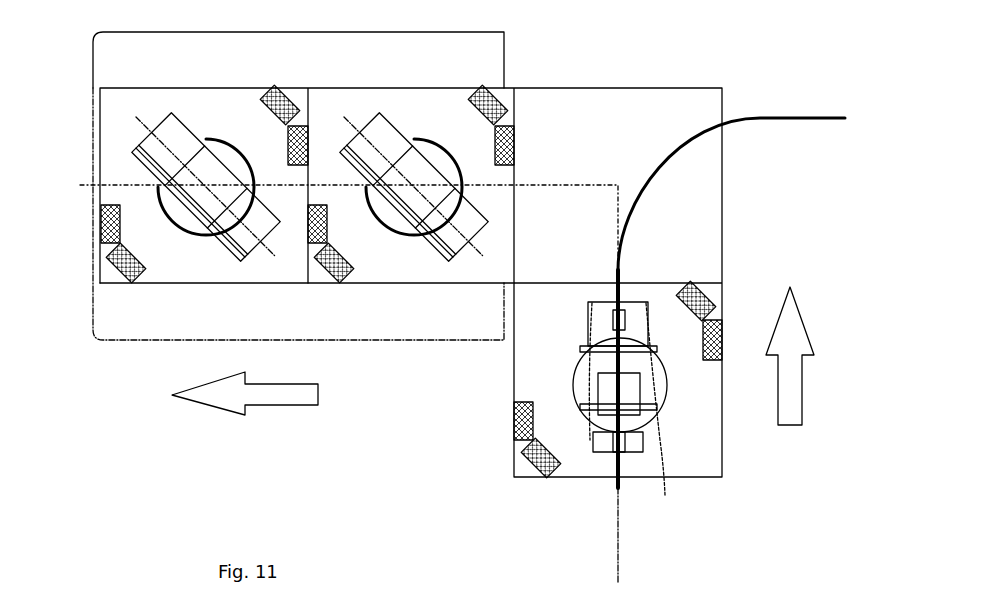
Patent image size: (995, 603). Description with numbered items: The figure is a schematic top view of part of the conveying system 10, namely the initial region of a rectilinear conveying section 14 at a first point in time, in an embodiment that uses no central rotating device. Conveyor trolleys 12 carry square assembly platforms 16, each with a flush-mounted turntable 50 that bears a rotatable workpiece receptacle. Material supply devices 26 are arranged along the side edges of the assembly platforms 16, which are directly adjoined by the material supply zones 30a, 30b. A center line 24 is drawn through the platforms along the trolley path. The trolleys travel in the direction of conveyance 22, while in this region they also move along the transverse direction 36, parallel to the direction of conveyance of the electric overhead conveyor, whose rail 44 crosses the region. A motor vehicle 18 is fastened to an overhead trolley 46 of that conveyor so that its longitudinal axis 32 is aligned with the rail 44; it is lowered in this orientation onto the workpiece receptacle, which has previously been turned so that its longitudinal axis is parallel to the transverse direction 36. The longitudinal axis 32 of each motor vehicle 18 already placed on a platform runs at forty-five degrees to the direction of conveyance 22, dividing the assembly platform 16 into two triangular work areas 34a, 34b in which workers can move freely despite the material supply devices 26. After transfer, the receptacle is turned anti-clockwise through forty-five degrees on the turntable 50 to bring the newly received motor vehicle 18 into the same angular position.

The conveying system 10 is at (138, 450).
The conveyor trolley 12 is at (95, 106).
The rectilinear conveying section 14 is at (447, 375).
The assembly platform 16 is at (100, 283).
The motor vehicle 18 is at (128, 142).
The direction of conveyance 22 is at (273, 403).
The center axis line 24 is at (120, 186).
The material supply device 26 is at (293, 90).
The material supply zone 30a is at (497, 54).
The material supply zone 30b is at (110, 343).
The longitudinal axis 32 is at (145, 120).
The triangular work area 34a is at (255, 128).
The triangular work area 34b is at (190, 238).
The transverse direction 36 is at (792, 390).
The rail 44 is at (768, 118).
The overhead trolley 46 is at (616, 218).
The turntable 50 is at (433, 145).